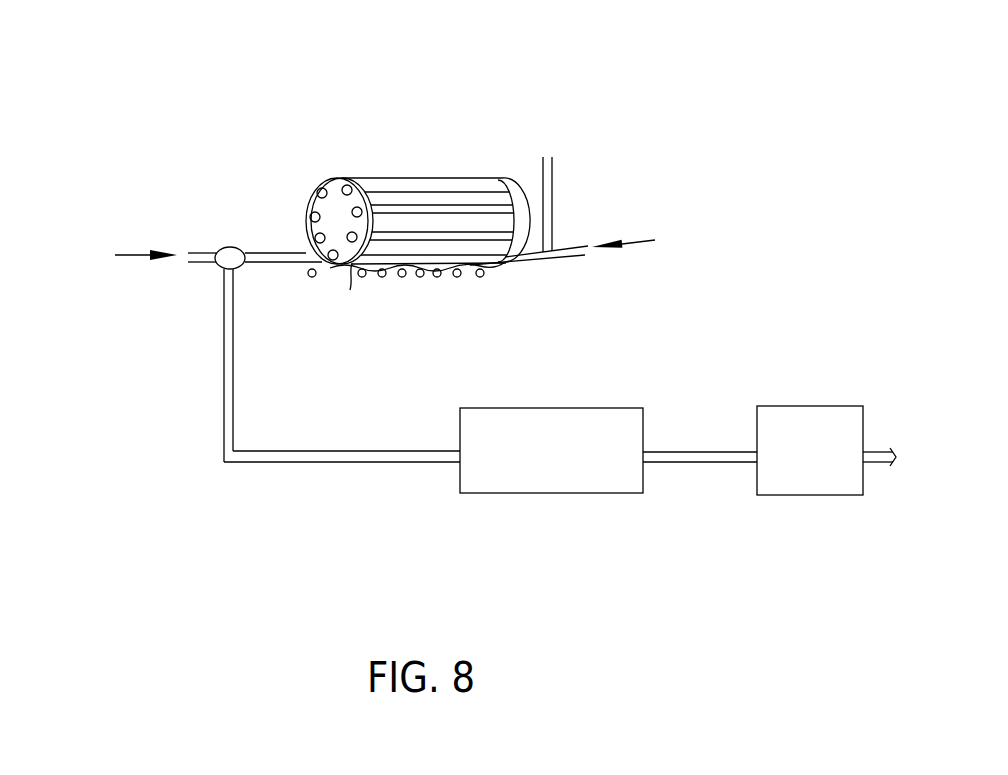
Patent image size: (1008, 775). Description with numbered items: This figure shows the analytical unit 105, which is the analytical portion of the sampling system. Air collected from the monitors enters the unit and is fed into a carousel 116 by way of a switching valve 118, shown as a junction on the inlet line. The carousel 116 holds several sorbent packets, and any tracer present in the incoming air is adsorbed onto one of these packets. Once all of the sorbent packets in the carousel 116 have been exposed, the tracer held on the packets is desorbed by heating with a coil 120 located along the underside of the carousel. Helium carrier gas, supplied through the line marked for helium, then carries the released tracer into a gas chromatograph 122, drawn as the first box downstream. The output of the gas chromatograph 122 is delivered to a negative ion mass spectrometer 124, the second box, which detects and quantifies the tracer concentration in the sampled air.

The analytical unit 105 is at (416, 98).
The carousel 116 is at (330, 180).
The switching valve 118 is at (208, 279).
The coil 120 is at (406, 293).
The gas chromatograph 122 is at (547, 495).
The negative ion mass spectrometer 124 is at (813, 493).